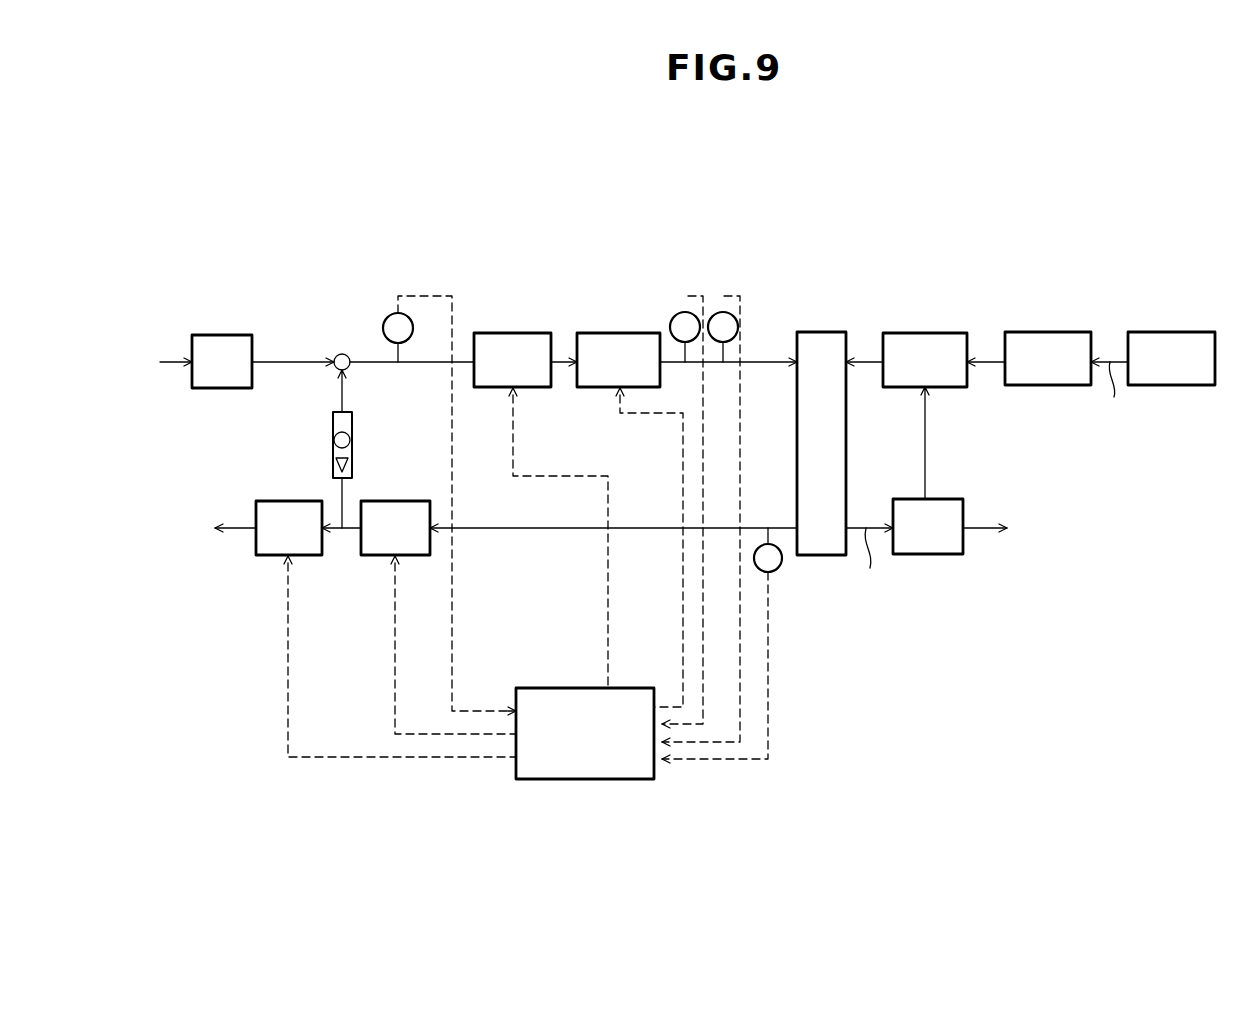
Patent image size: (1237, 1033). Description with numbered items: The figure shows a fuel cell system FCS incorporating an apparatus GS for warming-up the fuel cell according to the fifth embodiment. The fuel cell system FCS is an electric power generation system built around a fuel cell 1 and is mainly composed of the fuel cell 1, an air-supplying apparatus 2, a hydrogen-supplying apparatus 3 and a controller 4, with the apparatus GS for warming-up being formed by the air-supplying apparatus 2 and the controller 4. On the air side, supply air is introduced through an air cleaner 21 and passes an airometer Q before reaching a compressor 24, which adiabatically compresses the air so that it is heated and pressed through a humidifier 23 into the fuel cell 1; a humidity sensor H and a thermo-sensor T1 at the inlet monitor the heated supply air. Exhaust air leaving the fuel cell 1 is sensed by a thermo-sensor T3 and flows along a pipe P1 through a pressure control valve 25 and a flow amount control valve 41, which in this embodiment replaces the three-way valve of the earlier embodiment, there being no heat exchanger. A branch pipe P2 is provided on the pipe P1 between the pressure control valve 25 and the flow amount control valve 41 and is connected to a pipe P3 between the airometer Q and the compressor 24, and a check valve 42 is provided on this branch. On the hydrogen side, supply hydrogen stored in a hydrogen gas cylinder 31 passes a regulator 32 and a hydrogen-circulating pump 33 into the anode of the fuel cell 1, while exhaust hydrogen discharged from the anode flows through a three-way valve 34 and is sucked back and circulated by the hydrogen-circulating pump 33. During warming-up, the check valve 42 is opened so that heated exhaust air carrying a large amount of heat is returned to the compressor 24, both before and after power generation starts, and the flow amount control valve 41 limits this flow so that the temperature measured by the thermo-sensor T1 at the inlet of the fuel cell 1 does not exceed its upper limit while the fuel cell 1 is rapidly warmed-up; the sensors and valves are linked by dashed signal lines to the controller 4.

The fuel cell 1 is at (780, 308).
The air-supplying apparatus 2 is at (607, 188).
The hydrogen-supplying apparatus 3 is at (1040, 228).
The controller 4 is at (596, 813).
The air cleaner 21 is at (219, 335).
The humidifier 23 is at (622, 333).
The compressor 24 is at (514, 333).
The pressure control valve 25 is at (393, 501).
The hydrogen gas cylinder 31 is at (1175, 332).
The regulator 32 is at (1045, 332).
The hydrogen-circulating pump 33 is at (925, 333).
The three-way valve 34 is at (925, 555).
The flow amount control valve 41 is at (267, 501).
The check valve 42 is at (353, 443).
The airometer Q is at (398, 313).
The humidity sensor H is at (685, 311).
The thermo-sensor T1 is at (722, 308).
The thermo-sensor T3 is at (770, 572).
The pipe P1 is at (352, 530).
The branch pipe P2 is at (342, 503).
The pipe P3 is at (370, 360).
The fuel cell system FCS is at (906, 212).
The apparatus for warming-up the fuel cell GS is at (832, 668).